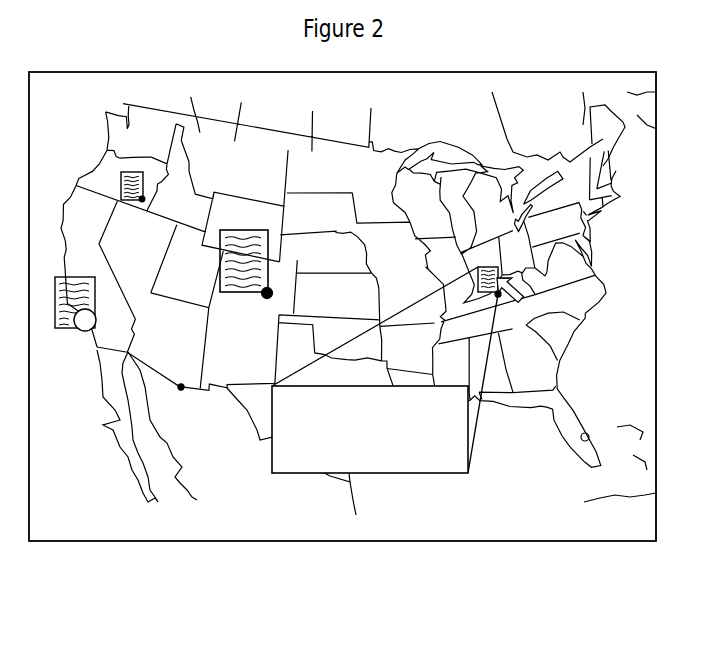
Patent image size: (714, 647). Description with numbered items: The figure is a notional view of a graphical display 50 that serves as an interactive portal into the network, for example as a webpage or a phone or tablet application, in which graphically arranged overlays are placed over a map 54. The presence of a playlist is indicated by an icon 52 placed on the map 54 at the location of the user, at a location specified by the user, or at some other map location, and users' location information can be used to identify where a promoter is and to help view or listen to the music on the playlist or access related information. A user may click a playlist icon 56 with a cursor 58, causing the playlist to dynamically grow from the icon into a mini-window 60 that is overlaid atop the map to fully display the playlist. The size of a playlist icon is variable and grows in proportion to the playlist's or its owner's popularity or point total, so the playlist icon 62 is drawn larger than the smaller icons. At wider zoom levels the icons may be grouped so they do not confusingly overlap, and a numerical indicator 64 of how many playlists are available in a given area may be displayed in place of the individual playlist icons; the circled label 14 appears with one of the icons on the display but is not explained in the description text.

The user device 14 is at (85, 320).
The graphical display 50 is at (348, 541).
The icon 52 is at (134, 172).
The map 54 is at (181, 387).
The playlist icon 56 is at (489, 267).
The cursor 58 is at (512, 281).
The mini-window 60 is at (290, 473).
The playlist icon 62 is at (242, 230).
The numerical indicator 64 is at (62, 330).